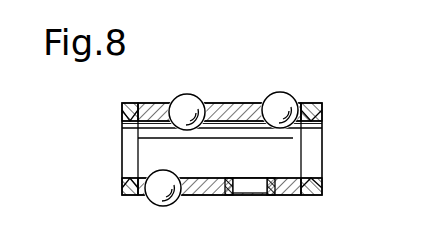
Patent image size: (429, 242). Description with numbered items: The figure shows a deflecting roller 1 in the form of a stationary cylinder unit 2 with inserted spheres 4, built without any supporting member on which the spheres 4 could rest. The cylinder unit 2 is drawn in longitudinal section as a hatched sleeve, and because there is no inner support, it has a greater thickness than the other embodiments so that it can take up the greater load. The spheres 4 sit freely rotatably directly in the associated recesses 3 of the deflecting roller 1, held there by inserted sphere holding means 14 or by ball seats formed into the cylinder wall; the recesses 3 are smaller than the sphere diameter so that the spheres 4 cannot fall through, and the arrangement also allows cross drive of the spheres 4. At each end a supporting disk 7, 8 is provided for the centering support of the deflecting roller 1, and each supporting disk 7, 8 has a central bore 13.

The deflecting roller 1 is at (214, 103).
The cylinder unit 2 is at (237, 103).
The recesses 3 is at (256, 197).
The spheres 4 is at (183, 99).
The supporting disk 7 is at (122, 112).
The supporting disk 8 is at (322, 108).
The central bore 13 is at (322, 150).
The sphere holding means 14 is at (238, 178).